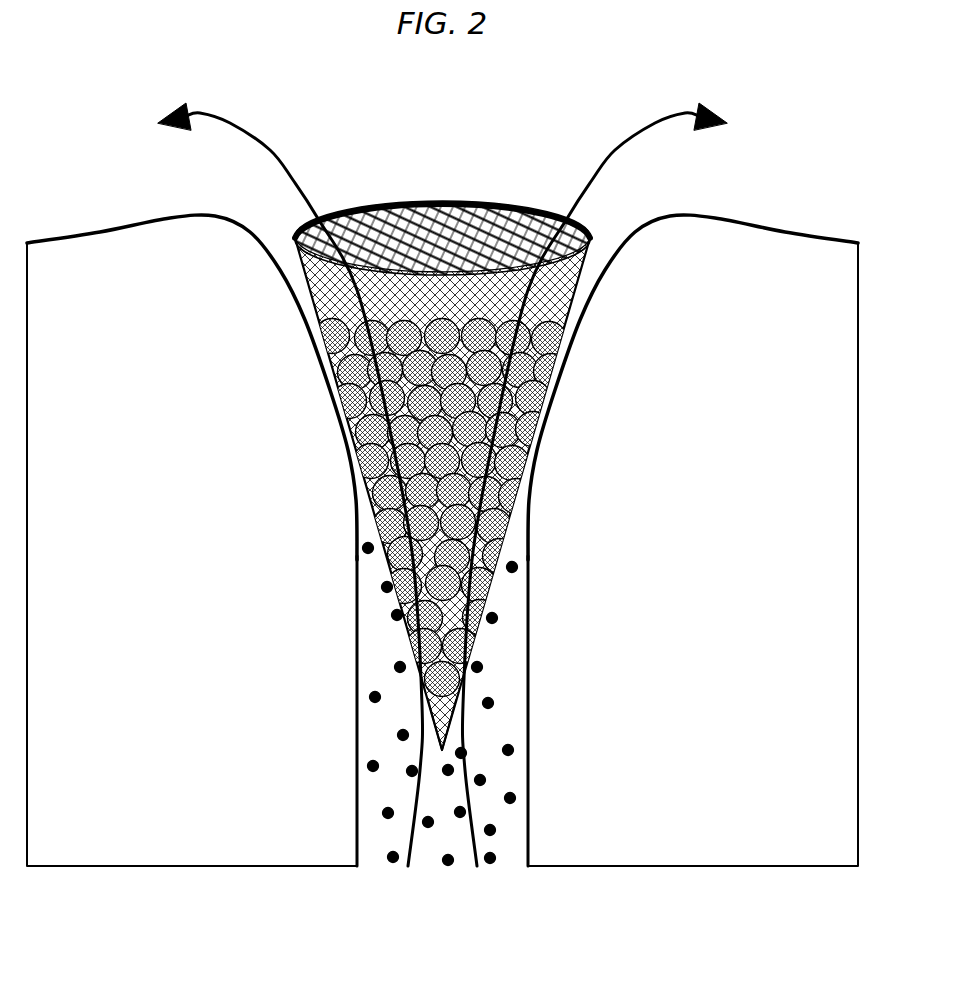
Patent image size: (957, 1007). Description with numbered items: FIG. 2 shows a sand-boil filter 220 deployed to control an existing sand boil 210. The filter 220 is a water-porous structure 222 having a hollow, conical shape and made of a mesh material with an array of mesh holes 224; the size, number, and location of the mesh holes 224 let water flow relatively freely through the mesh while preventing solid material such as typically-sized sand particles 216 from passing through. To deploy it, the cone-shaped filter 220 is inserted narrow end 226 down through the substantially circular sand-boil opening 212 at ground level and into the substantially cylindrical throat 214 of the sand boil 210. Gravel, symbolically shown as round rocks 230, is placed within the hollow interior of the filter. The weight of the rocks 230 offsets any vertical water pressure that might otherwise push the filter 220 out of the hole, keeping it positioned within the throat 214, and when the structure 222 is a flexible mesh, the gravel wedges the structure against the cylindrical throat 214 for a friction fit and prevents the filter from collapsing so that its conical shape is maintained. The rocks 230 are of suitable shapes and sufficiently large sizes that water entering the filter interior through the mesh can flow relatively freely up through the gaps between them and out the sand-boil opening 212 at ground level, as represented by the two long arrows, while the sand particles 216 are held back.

The sand boil 210 is at (443, 871).
The sand-boil opening 212 is at (278, 238).
The throat 214 is at (502, 649).
The sand particles 216 is at (513, 750).
The sand-boil filter 220 is at (475, 437).
The water-porous structure 222 is at (581, 272).
The mesh holes 224 is at (409, 235).
The narrow end 226 is at (426, 700).
The rocks 230 is at (503, 492).